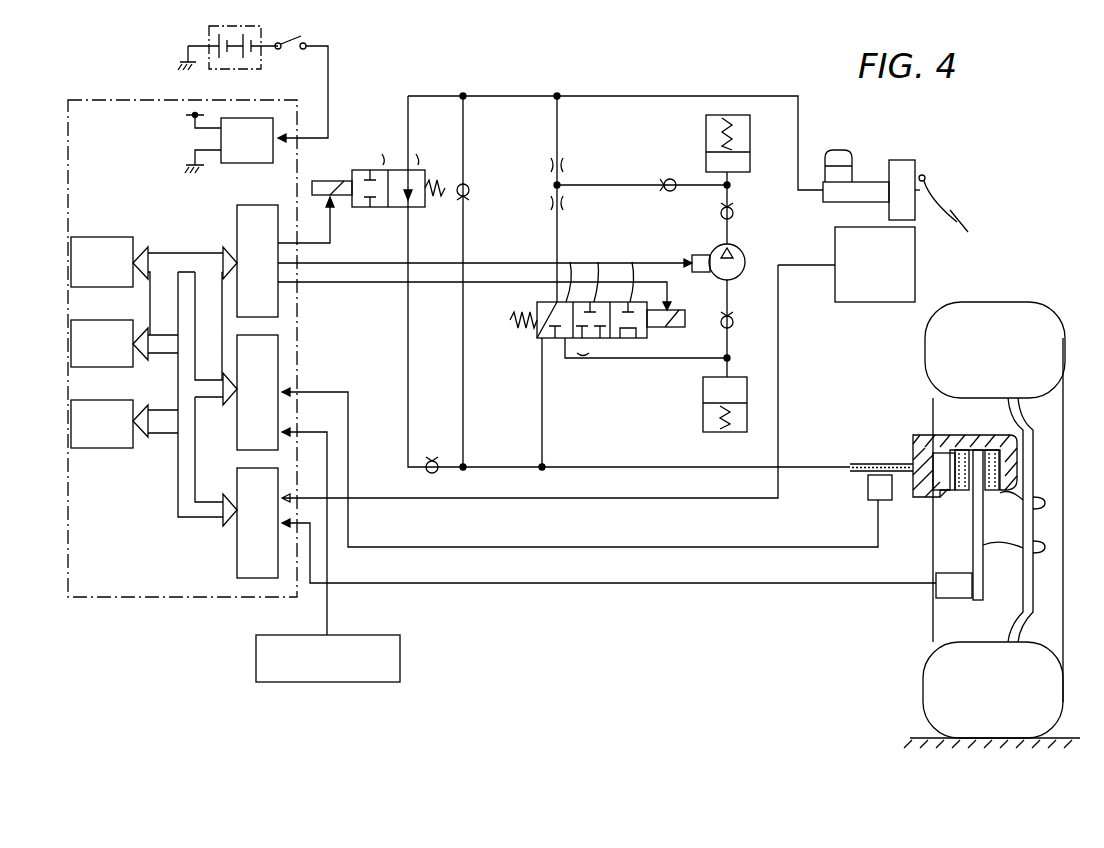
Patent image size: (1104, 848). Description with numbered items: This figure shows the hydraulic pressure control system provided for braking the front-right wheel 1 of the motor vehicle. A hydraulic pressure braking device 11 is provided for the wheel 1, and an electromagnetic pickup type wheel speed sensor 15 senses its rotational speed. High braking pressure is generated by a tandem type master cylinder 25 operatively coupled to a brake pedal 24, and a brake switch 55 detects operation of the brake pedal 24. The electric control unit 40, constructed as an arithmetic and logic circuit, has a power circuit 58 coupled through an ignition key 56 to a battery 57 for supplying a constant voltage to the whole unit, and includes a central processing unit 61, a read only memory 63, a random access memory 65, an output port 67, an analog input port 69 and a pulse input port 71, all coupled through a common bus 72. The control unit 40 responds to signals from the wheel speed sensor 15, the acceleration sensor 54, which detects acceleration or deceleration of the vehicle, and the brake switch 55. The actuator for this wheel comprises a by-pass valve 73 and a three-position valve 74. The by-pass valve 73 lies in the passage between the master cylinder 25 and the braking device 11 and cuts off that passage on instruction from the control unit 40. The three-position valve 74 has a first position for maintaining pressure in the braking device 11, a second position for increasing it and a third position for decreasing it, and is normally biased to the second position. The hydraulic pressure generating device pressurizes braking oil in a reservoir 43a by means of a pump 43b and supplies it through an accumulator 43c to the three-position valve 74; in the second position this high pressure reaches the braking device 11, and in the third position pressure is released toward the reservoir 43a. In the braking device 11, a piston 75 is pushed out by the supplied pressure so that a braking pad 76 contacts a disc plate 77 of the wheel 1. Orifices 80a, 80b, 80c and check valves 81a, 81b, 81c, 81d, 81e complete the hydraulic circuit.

The front-right wheel 1 is at (1062, 326).
The hydraulic pressure braking device 11 is at (925, 435).
The wheel speed sensor 15 is at (948, 598).
The brake pedal 24 is at (935, 190).
The master cylinder 25 is at (873, 182).
The electric control unit 40 is at (106, 100).
The reservoir 43a is at (703, 392).
The pump 43b is at (741, 254).
The accumulator 43c is at (750, 140).
The acceleration sensor 54 is at (400, 655).
The brake switch 55 is at (915, 275).
The ignition key 56 is at (293, 36).
The battery 57 is at (209, 34).
The power circuit 58 is at (262, 163).
The central processing unit 61 is at (124, 237).
The read only memory 63 is at (124, 320).
The random access memory 65 is at (124, 448).
The output port 67 is at (237, 214).
The analog input port 69 is at (237, 352).
The pulse input port 71 is at (237, 474).
The common bus 72 is at (178, 378).
The by-pass valve 73 is at (360, 170).
The three-position valve 74 is at (614, 338).
The piston 75 is at (940, 488).
The braking pad 76 is at (963, 490).
The disc plate 77 is at (973, 545).
The orifice 80a is at (566, 165).
The orifice 80b is at (566, 203).
The orifice 80c is at (584, 368).
The check valve 81a is at (734, 214).
The check valve 81b is at (670, 192).
The check valve 81c is at (747, 338).
The check valve 81d is at (470, 188).
The check valve 81e is at (432, 461).